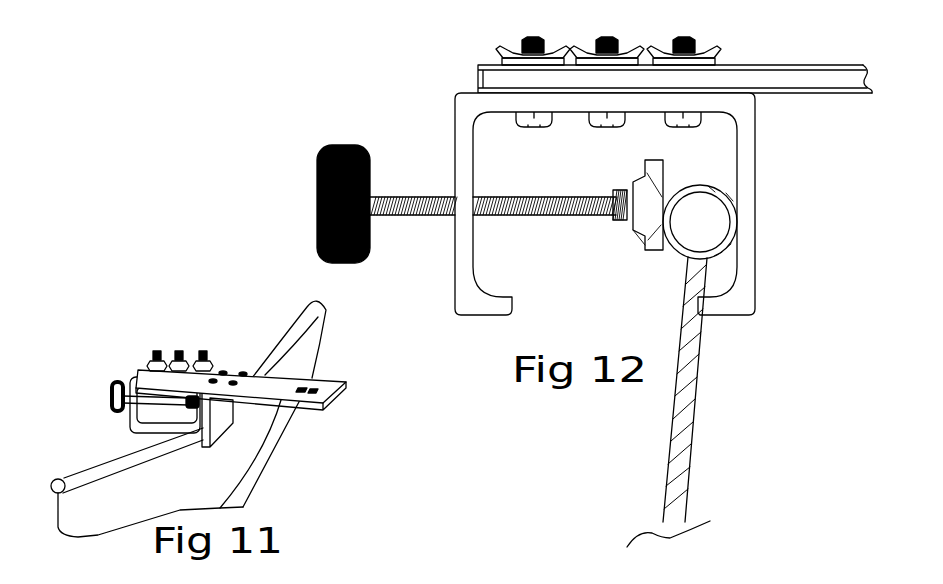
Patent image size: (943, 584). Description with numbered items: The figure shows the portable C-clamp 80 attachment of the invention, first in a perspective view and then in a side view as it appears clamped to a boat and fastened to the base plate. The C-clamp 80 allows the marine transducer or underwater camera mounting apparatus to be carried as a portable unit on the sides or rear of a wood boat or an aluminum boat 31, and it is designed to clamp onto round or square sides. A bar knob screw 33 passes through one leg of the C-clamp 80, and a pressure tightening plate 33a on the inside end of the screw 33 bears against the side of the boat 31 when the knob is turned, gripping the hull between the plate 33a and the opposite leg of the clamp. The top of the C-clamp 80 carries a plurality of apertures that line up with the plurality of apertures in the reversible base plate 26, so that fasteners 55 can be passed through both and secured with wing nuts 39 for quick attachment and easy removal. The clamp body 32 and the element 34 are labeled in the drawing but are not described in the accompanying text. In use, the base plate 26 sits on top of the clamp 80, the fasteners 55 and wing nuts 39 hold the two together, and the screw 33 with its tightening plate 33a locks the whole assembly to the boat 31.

In FIG. 12, the reversible base plate 26 is at (791, 96).
In FIG. 11, the reversible base plate 26 is at (277, 394).
In FIG. 12, the aluminum boat 31 is at (684, 411).
In FIG. 11, the aluminum boat 31 is at (122, 455).
In FIG. 12, the clamp body 32 is at (449, 125).
In FIG. 11, the clamp body 32 is at (127, 422).
In FIG. 12, the bar knob screw 33 is at (349, 265).
In FIG. 11, the bar knob screw 33 is at (109, 391).
In FIG. 12, the pressure tightening plate 33a is at (645, 256).
In FIG. 12, the bracket 34 is at (323, 5).
In FIG. 12, the wing nuts 39 is at (512, 52).
In FIG. 12, the fasteners 55 is at (611, 38).
In FIG. 11, the fasteners 55 is at (163, 360).
In FIG. 12, the C-clamp 80 is at (770, 224).
In FIG. 11, the C-clamp 80 is at (122, 372).